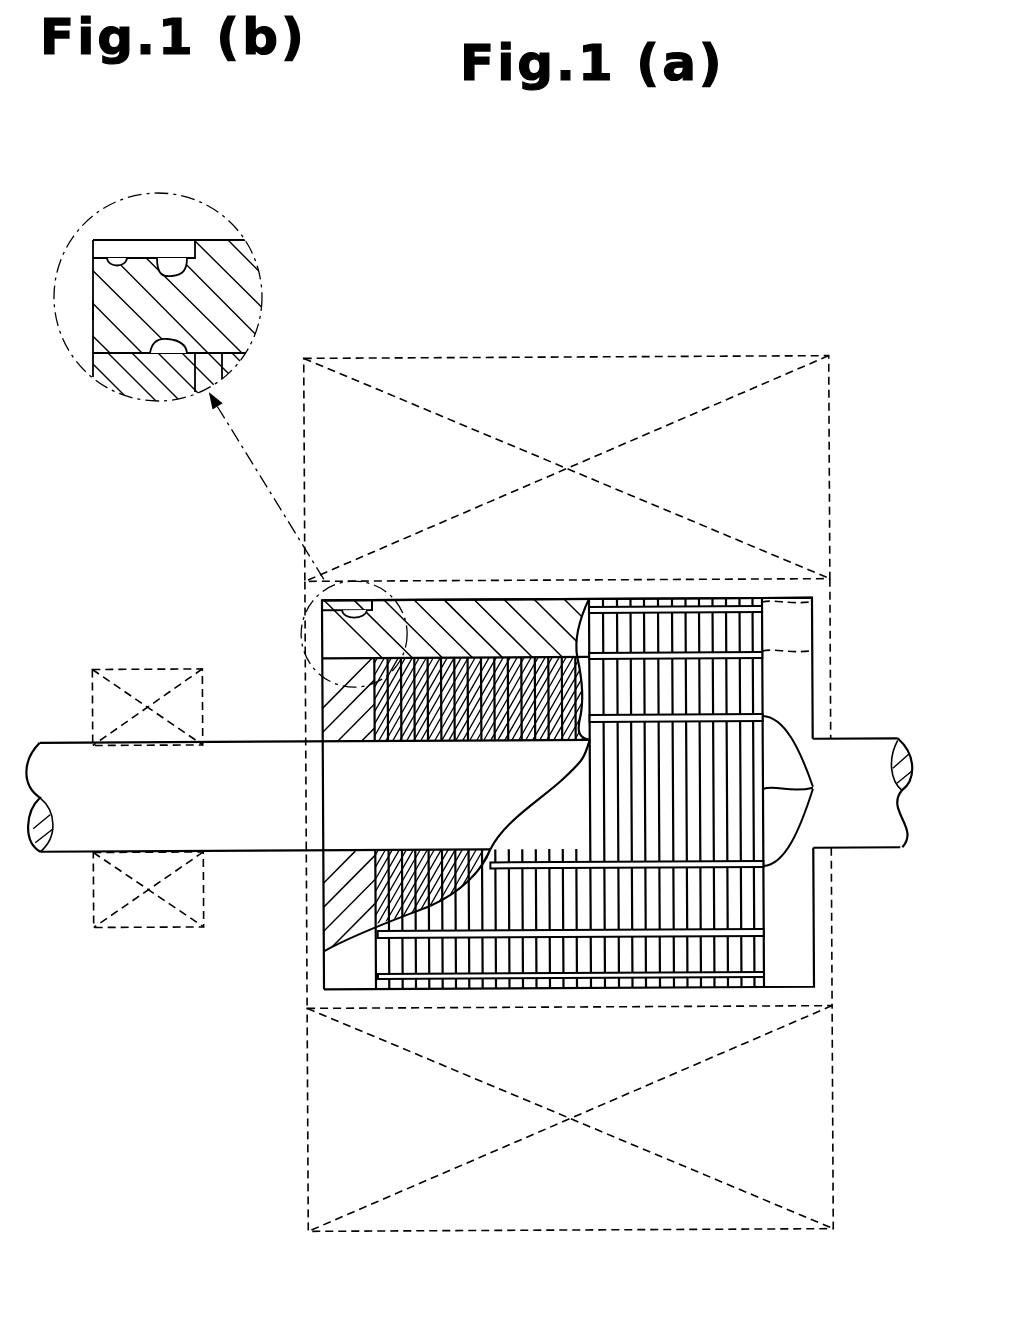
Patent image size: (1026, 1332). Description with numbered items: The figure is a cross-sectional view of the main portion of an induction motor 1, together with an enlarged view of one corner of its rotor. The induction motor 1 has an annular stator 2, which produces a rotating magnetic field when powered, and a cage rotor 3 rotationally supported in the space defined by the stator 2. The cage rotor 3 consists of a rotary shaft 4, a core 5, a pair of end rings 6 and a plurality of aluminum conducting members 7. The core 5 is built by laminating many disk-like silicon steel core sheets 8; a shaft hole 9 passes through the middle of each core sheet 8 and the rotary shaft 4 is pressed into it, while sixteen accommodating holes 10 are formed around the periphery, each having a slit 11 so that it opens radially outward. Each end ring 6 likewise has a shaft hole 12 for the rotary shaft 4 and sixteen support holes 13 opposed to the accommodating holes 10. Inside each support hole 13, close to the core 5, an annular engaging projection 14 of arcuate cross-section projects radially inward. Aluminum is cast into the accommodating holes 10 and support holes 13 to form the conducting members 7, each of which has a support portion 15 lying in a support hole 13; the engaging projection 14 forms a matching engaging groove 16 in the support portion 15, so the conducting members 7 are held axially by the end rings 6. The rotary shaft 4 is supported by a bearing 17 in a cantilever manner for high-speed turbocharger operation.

The induction motor 1 is at (755, 186).
The annular stator 2 is at (729, 357).
The cage rotor 3 is at (817, 597).
The rotary shaft 4 is at (55, 740).
The core 5 is at (625, 990).
In FIG. 1b, the end ring 6 is at (95, 378).
The end ring 6 is at (323, 900).
In FIG. 1b, the aluminum conducting member 7 is at (258, 290).
The aluminum conducting member 7 is at (538, 600).
The core sheet 8 is at (490, 990).
The shaft hole 9 is at (445, 740).
The accommodating hole 10 is at (457, 606).
The slit 11 is at (815, 790).
The shaft hole 12 is at (348, 740).
In FIG. 1b, the support hole 13 is at (117, 258).
The support hole 13 is at (335, 610).
In FIG. 1b, the engaging projection 14 is at (157, 252).
In FIG. 1b, the support portion 15 is at (95, 308).
The support portion 15 is at (330, 638).
In FIG. 1b, the engaging groove 16 is at (175, 365).
The bearing 17 is at (98, 667).